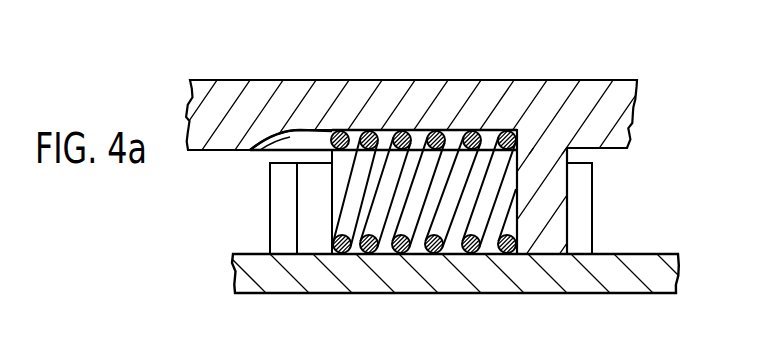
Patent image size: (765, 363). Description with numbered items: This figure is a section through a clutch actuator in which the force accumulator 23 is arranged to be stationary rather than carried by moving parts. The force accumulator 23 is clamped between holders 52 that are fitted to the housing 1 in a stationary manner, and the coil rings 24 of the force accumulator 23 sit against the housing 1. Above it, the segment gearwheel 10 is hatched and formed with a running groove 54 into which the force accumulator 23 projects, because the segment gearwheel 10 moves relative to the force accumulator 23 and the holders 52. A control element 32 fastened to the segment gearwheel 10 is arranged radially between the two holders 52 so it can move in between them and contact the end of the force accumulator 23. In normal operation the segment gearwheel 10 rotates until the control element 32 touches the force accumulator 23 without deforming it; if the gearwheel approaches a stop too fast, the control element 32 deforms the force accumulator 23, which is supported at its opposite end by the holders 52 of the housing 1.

The segment gearwheel 10 is at (480, 103).
The control element 32 is at (543, 184).
The running groove 54 is at (258, 153).
The holders 52 is at (310, 208).
The force accumulator 23 is at (360, 255).
The spring rings 24 is at (465, 254).
The housing 1 is at (537, 272).